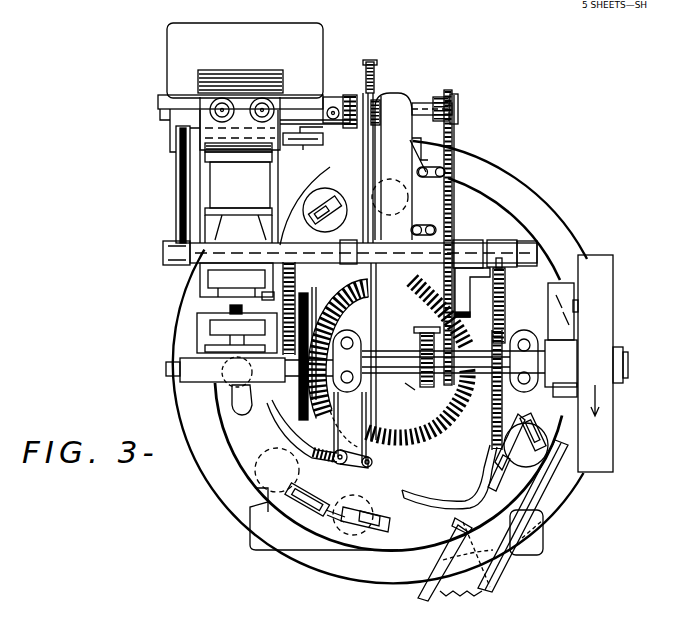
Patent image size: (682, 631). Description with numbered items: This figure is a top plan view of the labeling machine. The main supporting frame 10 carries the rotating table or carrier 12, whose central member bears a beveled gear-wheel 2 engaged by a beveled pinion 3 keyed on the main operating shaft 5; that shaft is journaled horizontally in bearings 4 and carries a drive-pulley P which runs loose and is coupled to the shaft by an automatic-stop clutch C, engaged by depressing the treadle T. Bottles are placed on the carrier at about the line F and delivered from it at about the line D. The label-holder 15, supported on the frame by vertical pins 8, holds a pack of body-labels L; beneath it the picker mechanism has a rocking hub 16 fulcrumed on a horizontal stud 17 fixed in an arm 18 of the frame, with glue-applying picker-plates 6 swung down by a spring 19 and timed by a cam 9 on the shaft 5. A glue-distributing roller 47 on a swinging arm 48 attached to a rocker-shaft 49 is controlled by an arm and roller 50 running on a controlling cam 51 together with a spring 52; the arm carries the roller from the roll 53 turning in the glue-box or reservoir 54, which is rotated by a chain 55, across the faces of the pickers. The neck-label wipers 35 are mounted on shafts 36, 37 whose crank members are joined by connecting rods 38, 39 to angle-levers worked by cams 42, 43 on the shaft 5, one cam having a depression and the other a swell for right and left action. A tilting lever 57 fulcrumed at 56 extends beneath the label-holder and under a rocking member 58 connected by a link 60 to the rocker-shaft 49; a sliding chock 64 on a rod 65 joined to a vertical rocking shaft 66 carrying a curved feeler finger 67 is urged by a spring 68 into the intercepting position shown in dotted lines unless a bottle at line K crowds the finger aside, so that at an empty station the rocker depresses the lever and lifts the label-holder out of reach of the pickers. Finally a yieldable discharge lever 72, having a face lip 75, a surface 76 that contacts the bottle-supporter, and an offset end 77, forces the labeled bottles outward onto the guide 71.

The beveled gear-wheel 2 is at (417, 359).
The beveled pinion 3 is at (335, 392).
The bearings 4 is at (435, 396).
The main operating shaft 5 is at (628, 365).
The glue-applying picker-plates 6 is at (205, 333).
The vertical pins 8 is at (240, 123).
The cam 9 is at (299, 341).
The main supporting frame 10 is at (257, 109).
The rotating table or carrier 12 is at (380, 362).
The label-holder 15 is at (238, 229).
The rocking carrier or hub 16 is at (215, 365).
The horizontal axis-stud 17 is at (166, 368).
The arm 18 is at (338, 348).
The spring 19 is at (263, 301).
The neck-label wipers 35 is at (430, 185).
The wiper shaft 36 is at (424, 219).
The wiper shaft 37 is at (437, 163).
The connecting rod 38 is at (453, 230).
The connecting rod 39 is at (453, 193).
The cam 42 is at (401, 392).
The cam 43 is at (425, 367).
The glue-distributing roller 47 is at (227, 143).
The swinging arm 48 is at (183, 190).
The rocker-shaft 49 is at (163, 252).
The arm and roller 50 is at (483, 300).
The controlling cam 51 is at (494, 398).
The spring 52 is at (471, 292).
The block 53 is at (227, 85).
The glue-box or reservoir 54 is at (287, 27).
The chain 55 is at (453, 211).
The fulcrum 56 is at (300, 144).
The tilting lever 57 is at (332, 130).
The rocking member 58 is at (358, 96).
The link 60 is at (320, 206).
The sliding chock 64 is at (377, 118).
The rod 65 is at (372, 460).
The vertical rocking shaft 66 is at (334, 469).
The feeler finger 67 is at (260, 443).
The spring 68 is at (378, 90).
The guide 71 is at (443, 596).
The discharge arm or lever 72 is at (482, 473).
The face lip 75 is at (468, 472).
The surface 76 is at (492, 480).
The offset end 77 is at (440, 477).
The automatic-stop clutch C is at (561, 340).
The line D is at (473, 561).
The line F is at (292, 512).
The line K is at (278, 468).
The body-labels L is at (239, 176).
The drive-pulley P is at (598, 318).
The treadle T is at (533, 532).